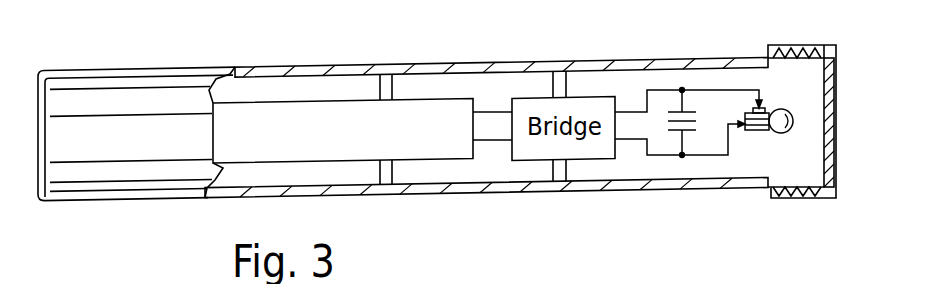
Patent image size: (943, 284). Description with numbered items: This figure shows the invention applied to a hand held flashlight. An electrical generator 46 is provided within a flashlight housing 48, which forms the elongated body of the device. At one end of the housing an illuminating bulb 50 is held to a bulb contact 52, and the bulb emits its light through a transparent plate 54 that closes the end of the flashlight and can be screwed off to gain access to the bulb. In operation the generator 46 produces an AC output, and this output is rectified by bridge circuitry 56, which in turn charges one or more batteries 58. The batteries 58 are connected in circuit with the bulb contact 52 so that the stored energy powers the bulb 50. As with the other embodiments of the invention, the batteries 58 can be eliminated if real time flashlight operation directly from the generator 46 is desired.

The electrical generator 46 is at (296, 91).
The flashlight housing 48 is at (103, 70).
The illuminating bulb 50 is at (794, 112).
The bulb contact 52 is at (757, 133).
The transparent plate 54 is at (838, 97).
The bridge circuitry 56 is at (529, 94).
The batteries 58 is at (696, 111).